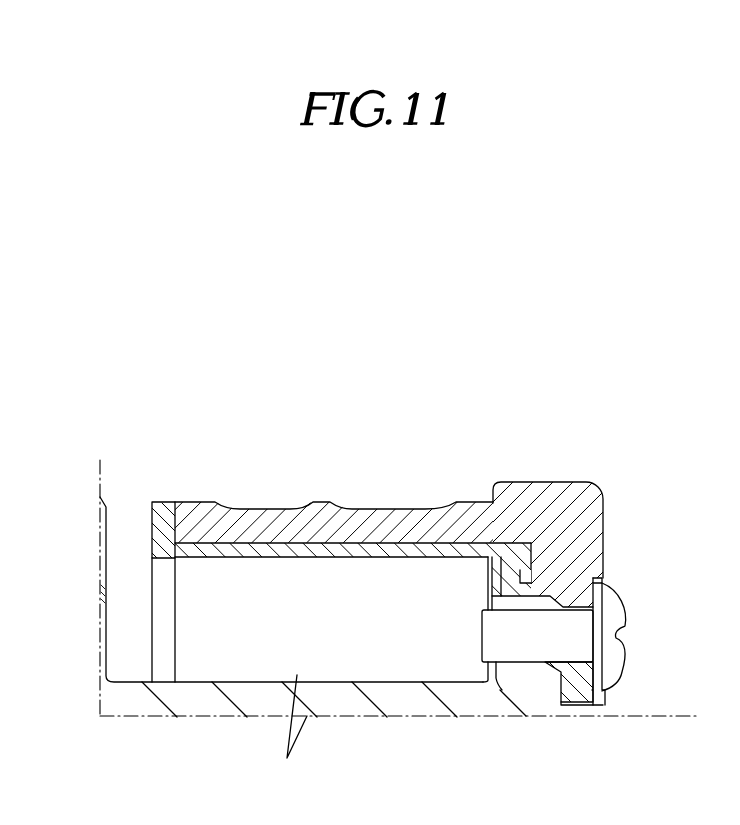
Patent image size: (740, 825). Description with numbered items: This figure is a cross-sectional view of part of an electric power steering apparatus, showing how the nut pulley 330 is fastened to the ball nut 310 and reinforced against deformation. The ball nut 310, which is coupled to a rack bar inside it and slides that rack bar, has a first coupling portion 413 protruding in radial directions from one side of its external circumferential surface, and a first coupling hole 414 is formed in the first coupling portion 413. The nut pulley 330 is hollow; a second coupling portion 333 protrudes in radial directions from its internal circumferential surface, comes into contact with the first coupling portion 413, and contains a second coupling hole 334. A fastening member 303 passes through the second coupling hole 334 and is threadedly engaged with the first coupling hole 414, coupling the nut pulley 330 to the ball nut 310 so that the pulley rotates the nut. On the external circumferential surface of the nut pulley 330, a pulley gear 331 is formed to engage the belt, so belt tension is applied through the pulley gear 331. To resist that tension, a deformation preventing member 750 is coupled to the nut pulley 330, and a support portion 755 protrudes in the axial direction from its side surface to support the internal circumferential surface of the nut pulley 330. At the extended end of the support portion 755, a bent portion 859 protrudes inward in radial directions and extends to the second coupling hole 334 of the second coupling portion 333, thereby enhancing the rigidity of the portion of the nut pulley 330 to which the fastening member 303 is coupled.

The fastening member 303 is at (608, 609).
The ball nut 310 is at (127, 699).
The nut pulley 330 is at (343, 527).
The pulley gear 331 is at (270, 507).
The second coupling portion 333 is at (575, 597).
The second coupling hole 334 is at (570, 644).
The first coupling portion 413 is at (505, 560).
The first coupling hole 414 is at (520, 648).
The deformation preventing member 750 is at (158, 506).
The support portion 755 is at (372, 547).
The bent portion 859 is at (548, 573).